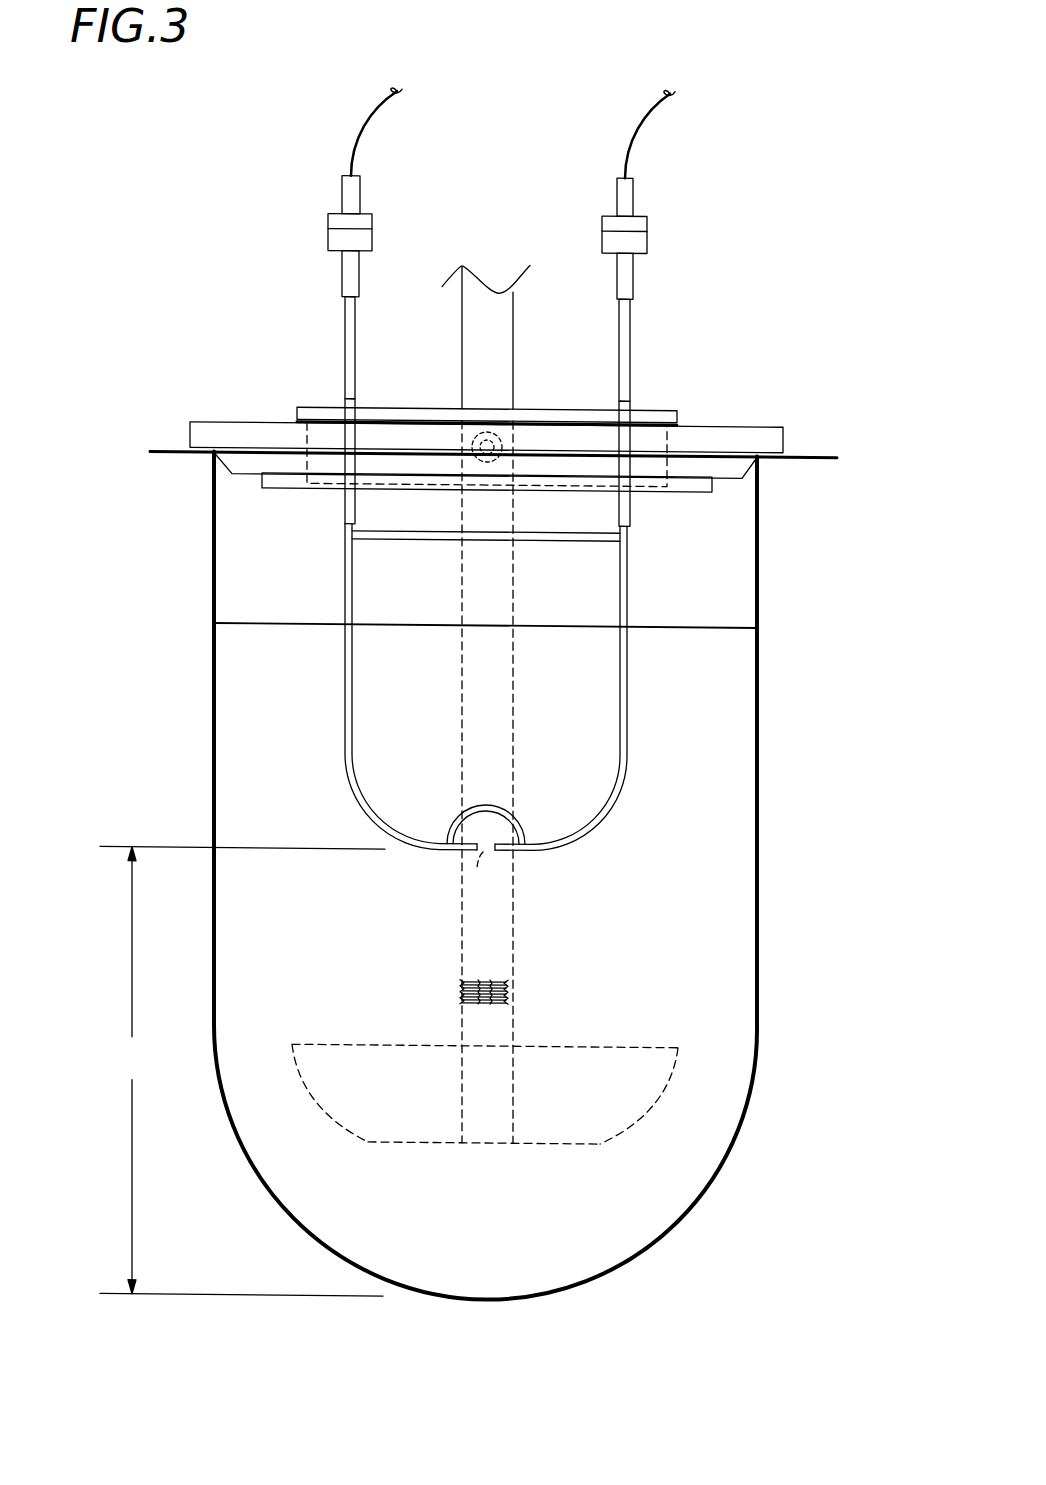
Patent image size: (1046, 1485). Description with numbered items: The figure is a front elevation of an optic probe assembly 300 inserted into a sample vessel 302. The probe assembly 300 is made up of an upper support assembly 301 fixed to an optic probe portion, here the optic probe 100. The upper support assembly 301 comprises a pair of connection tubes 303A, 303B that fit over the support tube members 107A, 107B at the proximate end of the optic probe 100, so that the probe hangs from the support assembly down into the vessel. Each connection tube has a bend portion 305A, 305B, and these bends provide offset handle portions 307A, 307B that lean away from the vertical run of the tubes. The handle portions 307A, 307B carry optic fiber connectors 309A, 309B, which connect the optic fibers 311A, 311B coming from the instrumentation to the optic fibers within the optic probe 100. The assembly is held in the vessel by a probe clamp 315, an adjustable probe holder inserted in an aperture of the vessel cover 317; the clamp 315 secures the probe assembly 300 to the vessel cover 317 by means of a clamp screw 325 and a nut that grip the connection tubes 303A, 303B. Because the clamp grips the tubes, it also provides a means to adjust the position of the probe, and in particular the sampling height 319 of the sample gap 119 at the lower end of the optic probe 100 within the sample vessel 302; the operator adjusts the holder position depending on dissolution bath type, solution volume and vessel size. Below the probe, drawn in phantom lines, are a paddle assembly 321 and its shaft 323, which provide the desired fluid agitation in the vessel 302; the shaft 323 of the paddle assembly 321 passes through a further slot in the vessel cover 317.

The optic probe assembly 300 is at (246, 198).
The upper support assembly 301 is at (676, 316).
The sample vessel 302 is at (210, 768).
The optic probe 100 is at (305, 709).
The connection tube 303A is at (415, 358).
The connection tube 303B is at (620, 373).
The bend portion 305A is at (343, 360).
The bend portion 305B is at (630, 360).
The handle portion 307A is at (352, 236).
The handle portion 307B is at (709, 231).
The optic fiber connector 309A is at (328, 230).
The optic fiber connector 309B is at (648, 232).
The optic fiber 311A is at (357, 112).
The optic fiber 311B is at (633, 115).
The probe clamp 315 is at (668, 410).
The vessel cover 317 is at (777, 427).
The clamp screw 325 is at (498, 458).
The support tube member 107A is at (345, 565).
The support tube member 107B is at (627, 565).
The shaft 323 is at (512, 722).
The sample gap 119 is at (483, 852).
The sampling height 319 is at (242, 1071).
The paddle assembly 321 is at (640, 1113).